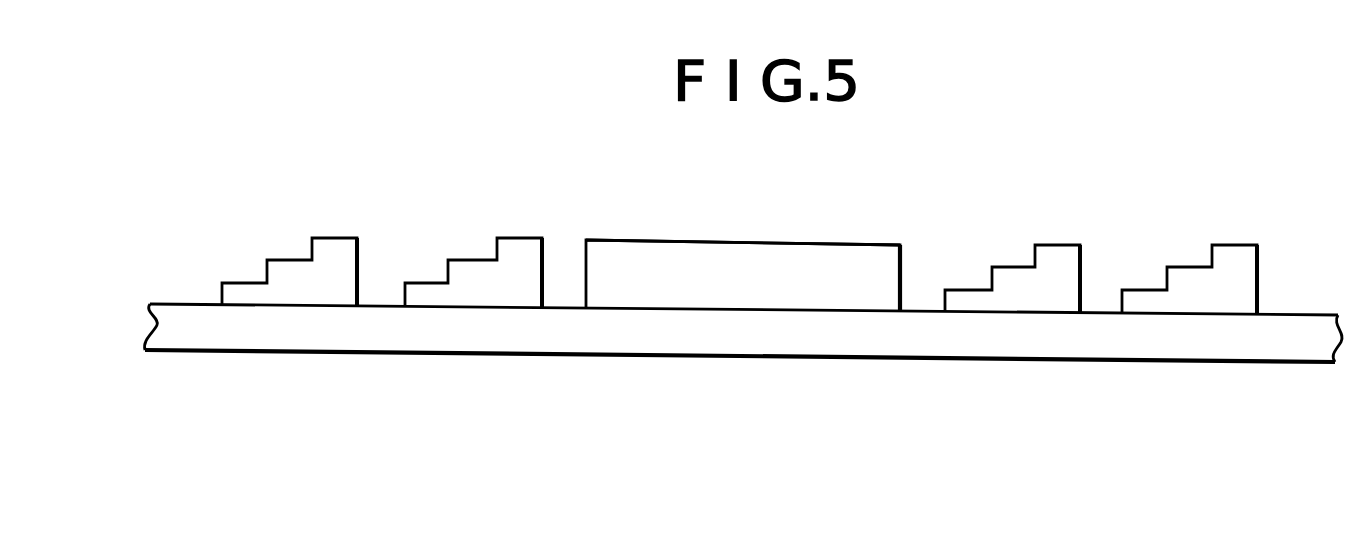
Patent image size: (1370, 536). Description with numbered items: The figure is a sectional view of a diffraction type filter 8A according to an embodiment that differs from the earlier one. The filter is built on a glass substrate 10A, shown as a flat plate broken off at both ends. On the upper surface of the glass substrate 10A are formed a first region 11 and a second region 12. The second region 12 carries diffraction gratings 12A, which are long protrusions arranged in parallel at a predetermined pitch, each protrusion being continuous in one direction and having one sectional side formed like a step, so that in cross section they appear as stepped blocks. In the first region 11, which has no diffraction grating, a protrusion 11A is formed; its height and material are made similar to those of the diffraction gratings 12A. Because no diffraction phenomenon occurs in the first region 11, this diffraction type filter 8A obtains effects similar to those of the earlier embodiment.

The second region 12 is at (550, 213).
The first region 11 is at (770, 220).
The protrusion 11A is at (875, 243).
The diffraction grating 12A is at (1067, 245).
The diffraction type filter 8A is at (1199, 366).
The glass substrate 10A is at (1304, 349).